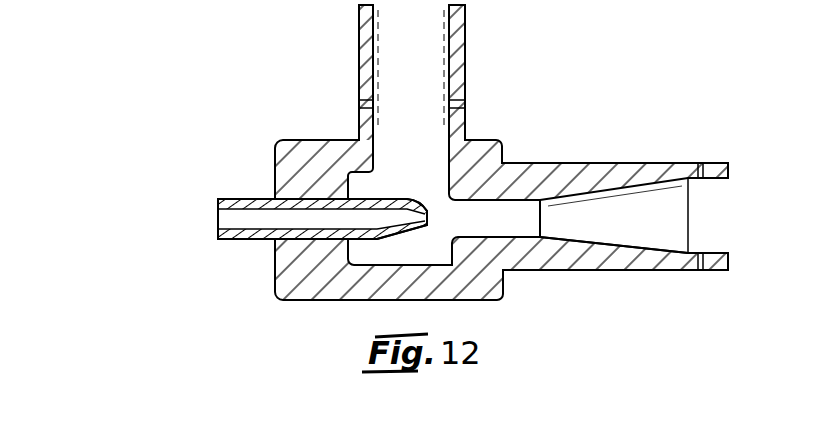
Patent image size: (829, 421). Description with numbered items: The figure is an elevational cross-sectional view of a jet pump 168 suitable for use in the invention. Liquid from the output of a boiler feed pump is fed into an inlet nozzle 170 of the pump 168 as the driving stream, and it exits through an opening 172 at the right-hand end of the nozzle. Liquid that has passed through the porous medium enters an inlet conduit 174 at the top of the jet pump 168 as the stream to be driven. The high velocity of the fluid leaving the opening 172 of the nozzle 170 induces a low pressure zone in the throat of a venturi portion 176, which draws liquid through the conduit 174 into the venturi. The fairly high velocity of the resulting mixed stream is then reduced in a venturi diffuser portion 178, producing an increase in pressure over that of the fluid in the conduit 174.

The jet pump 168 is at (577, 156).
The inlet nozzle 170 is at (246, 199).
The opening 172 is at (423, 207).
The inlet conduit 174 is at (465, 70).
The venturi portion 176 is at (525, 238).
The venturi diffuser portion 178 is at (615, 244).